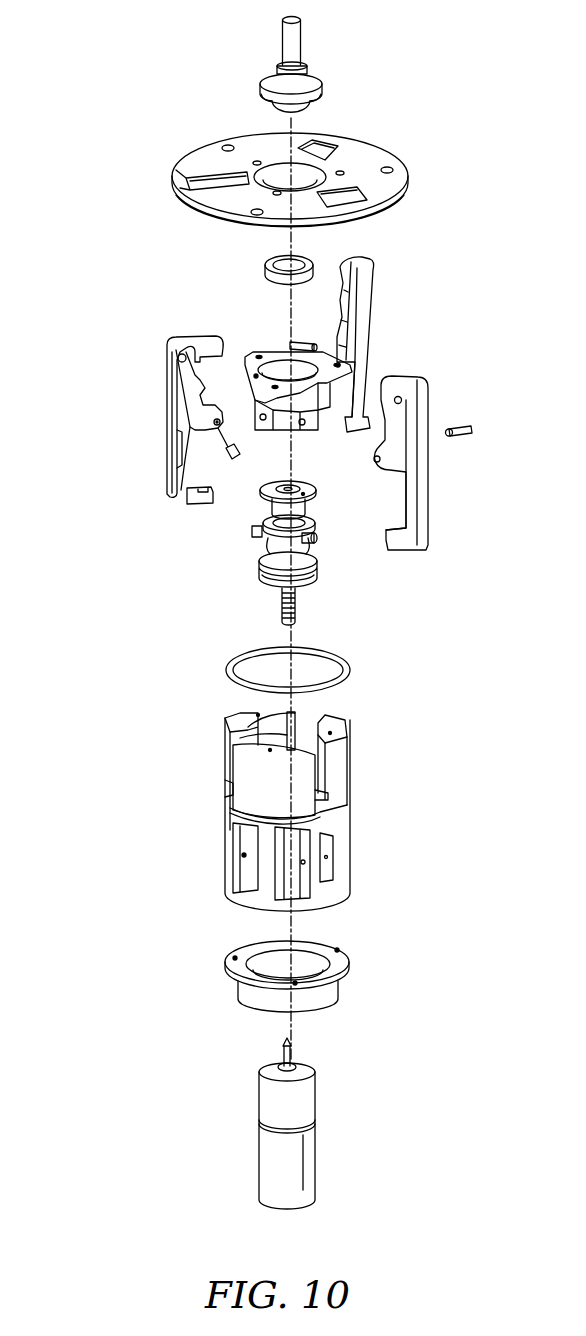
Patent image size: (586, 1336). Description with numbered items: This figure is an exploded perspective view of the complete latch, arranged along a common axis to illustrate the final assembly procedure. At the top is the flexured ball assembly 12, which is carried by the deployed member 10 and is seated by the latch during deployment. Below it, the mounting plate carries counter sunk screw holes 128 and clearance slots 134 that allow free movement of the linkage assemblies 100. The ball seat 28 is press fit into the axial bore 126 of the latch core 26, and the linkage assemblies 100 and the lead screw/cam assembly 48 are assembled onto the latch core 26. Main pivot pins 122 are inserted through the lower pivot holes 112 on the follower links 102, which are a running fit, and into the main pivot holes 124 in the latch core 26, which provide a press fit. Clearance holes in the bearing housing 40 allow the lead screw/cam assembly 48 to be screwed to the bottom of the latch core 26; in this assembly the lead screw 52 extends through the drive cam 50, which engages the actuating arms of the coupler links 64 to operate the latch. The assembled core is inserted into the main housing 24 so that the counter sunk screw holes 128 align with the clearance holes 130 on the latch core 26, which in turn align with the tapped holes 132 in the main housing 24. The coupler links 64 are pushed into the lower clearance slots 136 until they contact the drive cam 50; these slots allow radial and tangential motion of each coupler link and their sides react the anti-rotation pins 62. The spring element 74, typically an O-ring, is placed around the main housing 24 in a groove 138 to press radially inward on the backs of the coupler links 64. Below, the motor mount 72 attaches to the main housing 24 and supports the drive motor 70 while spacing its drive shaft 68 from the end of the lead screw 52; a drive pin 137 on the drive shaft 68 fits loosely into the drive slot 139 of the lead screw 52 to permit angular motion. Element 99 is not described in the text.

The deployed member 10 is at (398, 156).
The flexured ball assembly 12 is at (305, 38).
The main housing 24 is at (330, 900).
The latch core 26 is at (258, 364).
The ball seat 28 is at (268, 268).
The bearing housing 40 is at (263, 503).
The lead screw/cam assembly 48 is at (234, 552).
The drive cam 50 is at (267, 568).
The lead screw 52 is at (297, 597).
The anti-rotation pins 62 is at (315, 538).
The coupler links 64 is at (374, 380).
The drive shaft 68 is at (277, 1055).
The drive motor 70 is at (313, 1157).
The motor mount 72 is at (223, 968).
The spring element 74 is at (352, 667).
The guide bar 99 is at (300, 730).
The linkage assemblies 100 is at (390, 288).
The follower links 102 is at (372, 322).
The lower pivot holes 112 is at (378, 350).
The main pivot pins 122 is at (315, 345).
The main pivot holes 124 is at (264, 418).
The axial bore 126 is at (273, 360).
The counter sunk screw holes 128 is at (258, 161).
The clearance holes 130 is at (337, 363).
The tapped holes 132 is at (237, 726).
The clearance slots 134 is at (333, 140).
The lower clearance slots 136 is at (227, 850).
The drive pin 137 is at (294, 1047).
The groove 138 is at (353, 797).
The drive slot 139 is at (277, 610).